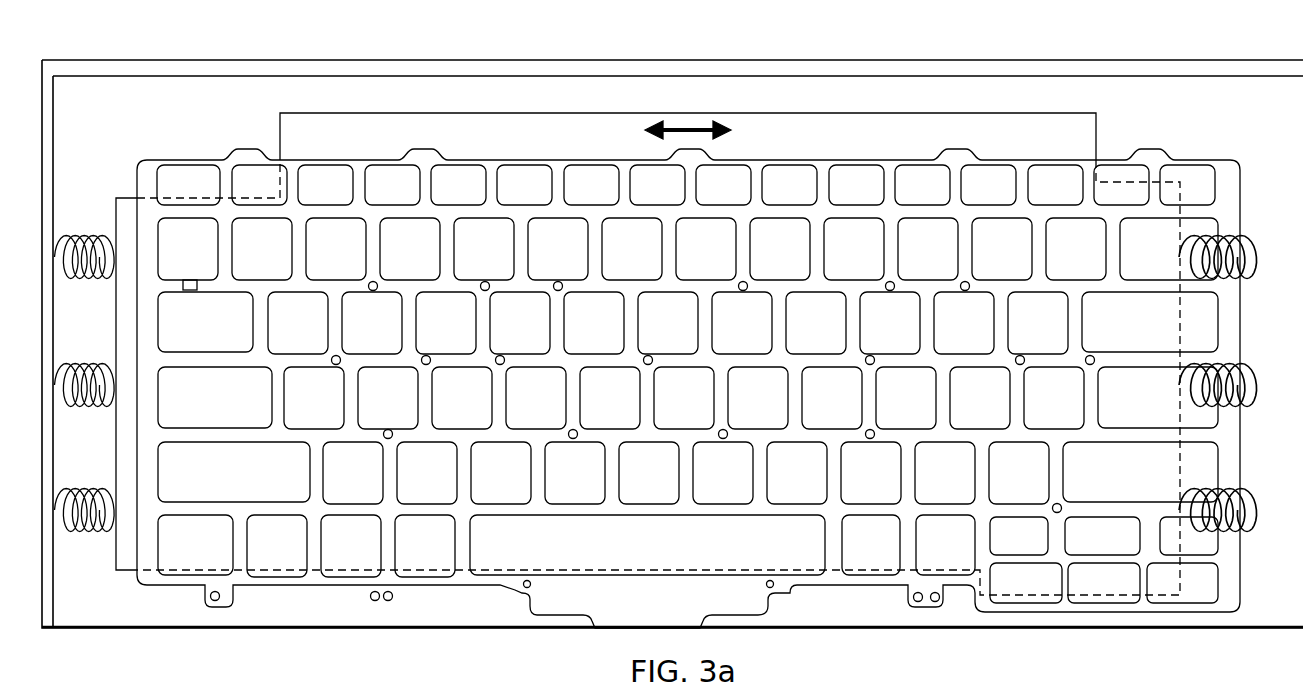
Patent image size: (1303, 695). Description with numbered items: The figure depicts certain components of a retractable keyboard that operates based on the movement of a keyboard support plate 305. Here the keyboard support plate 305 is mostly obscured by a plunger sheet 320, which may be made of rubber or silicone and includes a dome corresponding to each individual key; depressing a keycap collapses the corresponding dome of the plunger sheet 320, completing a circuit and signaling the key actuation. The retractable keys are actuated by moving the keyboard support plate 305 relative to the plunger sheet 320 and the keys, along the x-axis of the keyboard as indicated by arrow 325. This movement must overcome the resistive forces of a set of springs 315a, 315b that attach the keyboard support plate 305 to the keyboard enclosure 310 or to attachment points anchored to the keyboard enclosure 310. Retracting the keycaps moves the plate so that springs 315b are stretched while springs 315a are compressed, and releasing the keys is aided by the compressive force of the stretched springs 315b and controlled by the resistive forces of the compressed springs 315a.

The keyboard support plate 305 is at (125, 195).
The keyboard enclosure 310 is at (1227, 78).
The springs 315a is at (90, 283).
The springs 315b is at (1258, 237).
The plunger sheet 320 is at (563, 610).
The arrow 325 is at (690, 124).